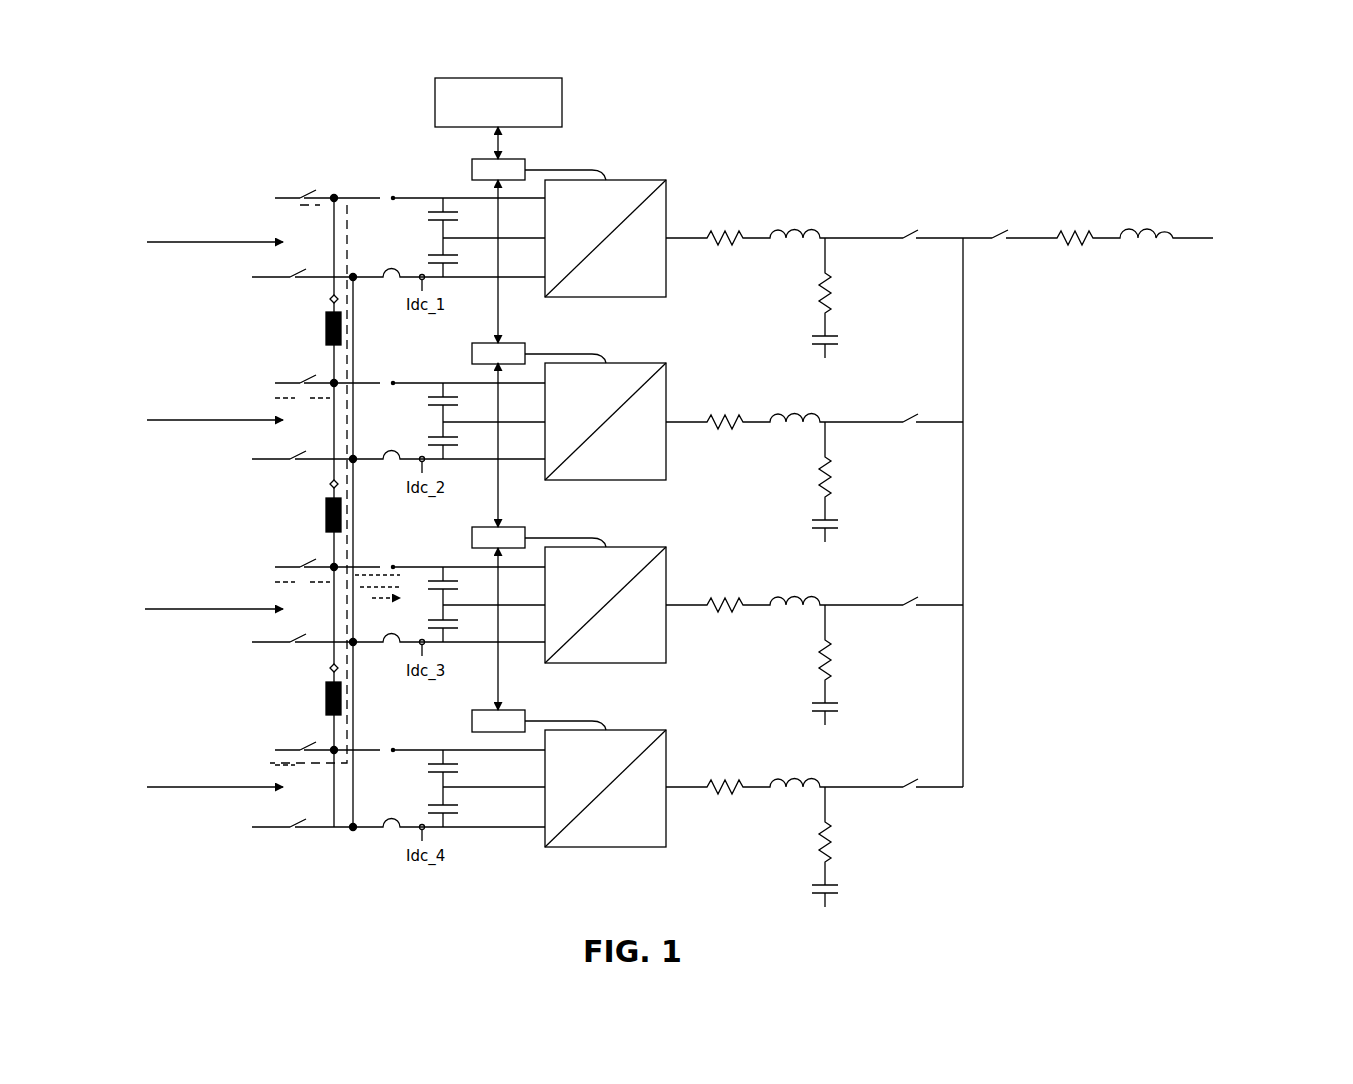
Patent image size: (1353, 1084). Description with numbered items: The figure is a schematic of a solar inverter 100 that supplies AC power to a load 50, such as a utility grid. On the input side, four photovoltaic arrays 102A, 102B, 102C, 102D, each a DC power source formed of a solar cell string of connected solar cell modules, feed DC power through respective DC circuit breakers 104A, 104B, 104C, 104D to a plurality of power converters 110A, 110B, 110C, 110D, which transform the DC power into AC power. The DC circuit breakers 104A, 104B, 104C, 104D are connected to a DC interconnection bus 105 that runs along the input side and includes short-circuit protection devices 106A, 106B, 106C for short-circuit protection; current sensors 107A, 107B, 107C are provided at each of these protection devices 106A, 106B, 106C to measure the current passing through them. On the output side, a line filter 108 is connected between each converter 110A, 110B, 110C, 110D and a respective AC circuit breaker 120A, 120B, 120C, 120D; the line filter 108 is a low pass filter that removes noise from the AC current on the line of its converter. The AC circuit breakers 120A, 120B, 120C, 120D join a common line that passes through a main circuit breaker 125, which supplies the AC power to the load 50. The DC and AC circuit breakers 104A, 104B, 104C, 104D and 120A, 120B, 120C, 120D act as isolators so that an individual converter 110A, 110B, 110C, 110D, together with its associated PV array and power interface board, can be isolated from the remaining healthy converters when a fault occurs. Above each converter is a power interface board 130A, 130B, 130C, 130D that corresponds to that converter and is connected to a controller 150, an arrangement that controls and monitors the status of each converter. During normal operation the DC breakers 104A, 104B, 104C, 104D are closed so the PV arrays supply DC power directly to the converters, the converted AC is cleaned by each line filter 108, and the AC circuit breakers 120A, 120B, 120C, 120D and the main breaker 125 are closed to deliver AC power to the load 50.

The solar inverter 100 is at (796, 148).
The PV array 102A is at (175, 242).
The PV array 102B is at (160, 420).
The PV array 102C is at (195, 609).
The PV array 102D is at (196, 779).
The DC circuit breaker 104A is at (294, 256).
The DC circuit breaker 104B is at (267, 378).
The DC circuit breaker 104C is at (274, 560).
The DC circuit breaker 104D is at (294, 747).
The DC interconnection bus 105 is at (334, 195).
The short-circuit protection device 106A is at (324, 325).
The short-circuit protection device 106B is at (324, 512).
The short-circuit protection device 106C is at (324, 696).
The current sensor 107A is at (329, 299).
The current sensor 107B is at (329, 484).
The current sensor 107C is at (329, 668).
The line filter 108 is at (840, 301).
The power converter 110A is at (668, 190).
The power converter 110B is at (668, 373).
The power converter 110C is at (668, 572).
The power converter 110D is at (668, 755).
The AC circuit breaker 120A is at (905, 230).
The AC circuit breaker 120B is at (911, 411).
The AC circuit breaker 120C is at (933, 587).
The AC circuit breaker 120D is at (913, 770).
The main circuit breaker 125 is at (1014, 224).
The power interface board 130A is at (474, 169).
The power interface board 130B is at (474, 353).
The power interface board 130C is at (474, 537).
The power interface board 130D is at (474, 720).
The controller 150 is at (440, 100).
The load 50 is at (1266, 254).